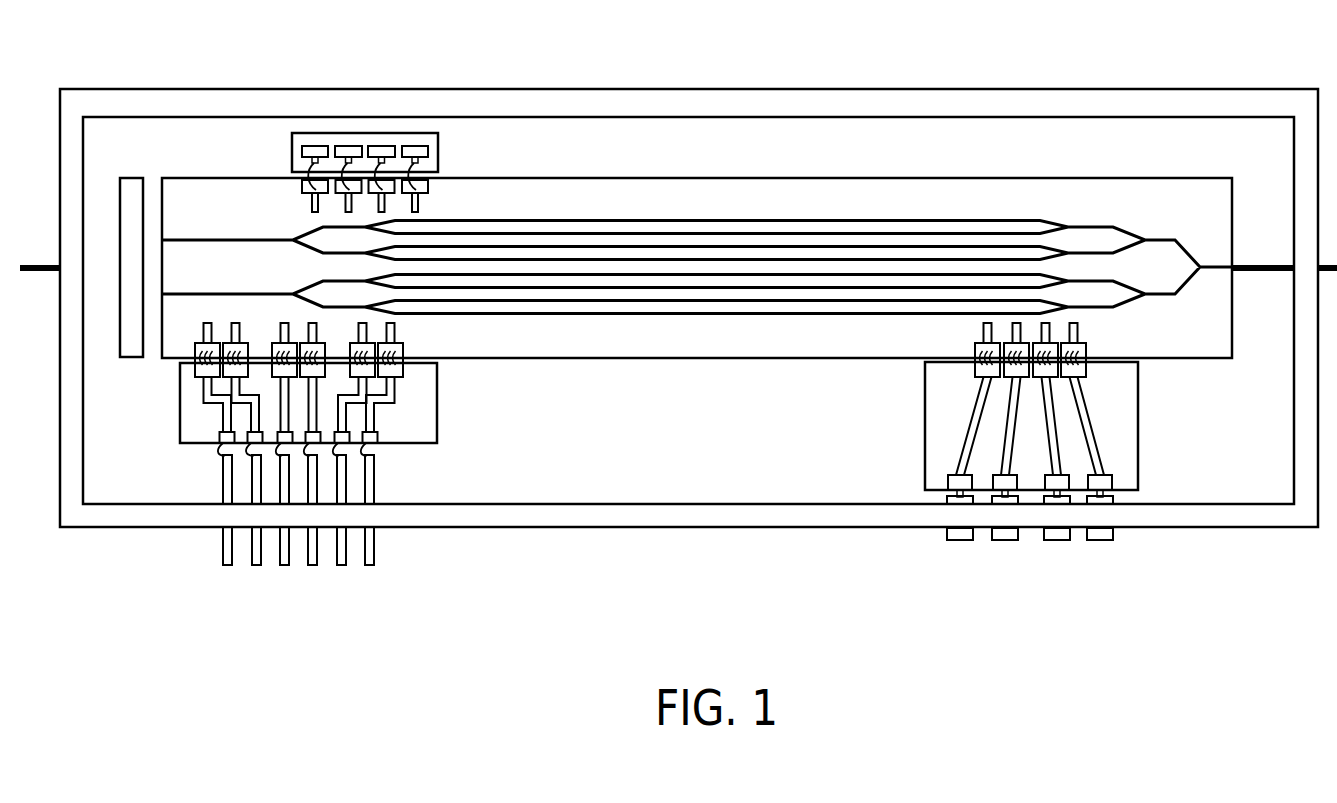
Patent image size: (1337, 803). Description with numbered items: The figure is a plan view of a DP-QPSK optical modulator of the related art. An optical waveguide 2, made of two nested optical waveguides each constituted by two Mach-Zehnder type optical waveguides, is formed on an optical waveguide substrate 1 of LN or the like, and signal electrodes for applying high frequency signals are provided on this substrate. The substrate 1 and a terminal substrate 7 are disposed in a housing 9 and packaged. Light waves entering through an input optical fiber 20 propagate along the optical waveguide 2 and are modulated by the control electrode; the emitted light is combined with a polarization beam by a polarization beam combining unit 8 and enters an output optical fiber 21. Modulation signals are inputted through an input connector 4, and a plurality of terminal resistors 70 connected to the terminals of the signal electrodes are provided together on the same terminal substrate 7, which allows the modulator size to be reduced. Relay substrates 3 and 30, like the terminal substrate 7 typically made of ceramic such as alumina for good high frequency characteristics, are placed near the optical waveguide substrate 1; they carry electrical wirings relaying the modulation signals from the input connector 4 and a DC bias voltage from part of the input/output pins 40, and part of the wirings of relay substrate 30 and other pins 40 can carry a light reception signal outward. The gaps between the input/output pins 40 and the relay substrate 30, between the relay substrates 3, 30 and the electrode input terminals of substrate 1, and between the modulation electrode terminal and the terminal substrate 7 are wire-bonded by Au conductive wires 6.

The optical waveguide substrate 1 is at (800, 195).
The optical waveguide 2 is at (1136, 215).
The relay substrate 3 is at (1113, 422).
The input connector 4 is at (1107, 493).
The conductive wire 6 is at (415, 175).
The terminal substrate 7 is at (377, 114).
The terminal resistor 70 is at (320, 153).
The polarization beam combining unit 8 is at (133, 178).
The housing 9 is at (688, 115).
The input optical fiber 20 is at (1248, 266).
The output optical fiber 21 is at (35, 272).
The relay substrate 30 is at (422, 420).
The input/output pin 40 is at (372, 533).